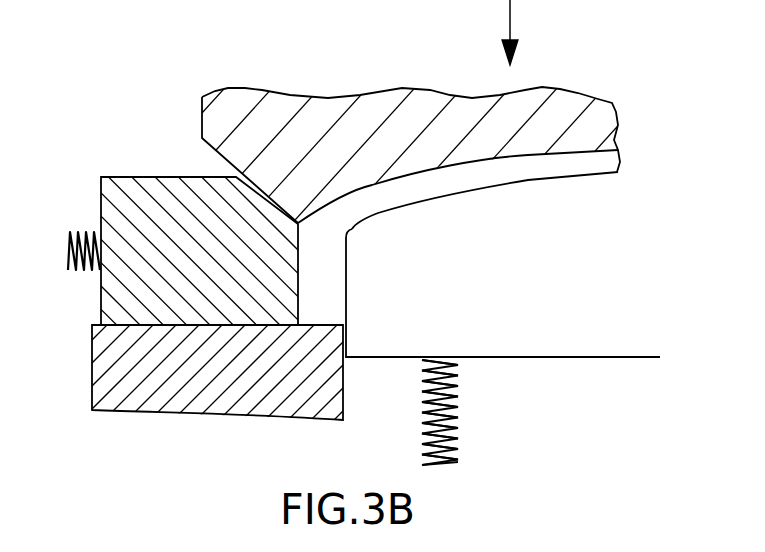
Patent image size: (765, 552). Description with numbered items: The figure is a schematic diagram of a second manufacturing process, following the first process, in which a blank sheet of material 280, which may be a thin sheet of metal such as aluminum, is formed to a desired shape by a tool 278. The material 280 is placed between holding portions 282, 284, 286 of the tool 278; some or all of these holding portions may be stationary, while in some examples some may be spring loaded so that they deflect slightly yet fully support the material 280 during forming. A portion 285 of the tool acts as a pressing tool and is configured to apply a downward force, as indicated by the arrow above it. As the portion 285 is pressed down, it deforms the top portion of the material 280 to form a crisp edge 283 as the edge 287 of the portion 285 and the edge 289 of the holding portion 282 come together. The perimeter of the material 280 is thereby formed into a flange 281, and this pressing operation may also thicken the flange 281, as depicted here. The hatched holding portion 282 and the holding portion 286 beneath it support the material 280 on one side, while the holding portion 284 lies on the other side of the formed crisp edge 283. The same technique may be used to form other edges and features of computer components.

The tool 278 is at (131, 70).
The material 280 is at (595, 157).
The flange 281 is at (332, 318).
The holding portion 282 is at (235, 273).
The crisp edge 283 is at (316, 230).
The holding portion 284 is at (521, 276).
The portion 285 is at (417, 140).
The holding portion 286 is at (216, 390).
The edge 287 is at (257, 186).
The edge 289 is at (257, 186).